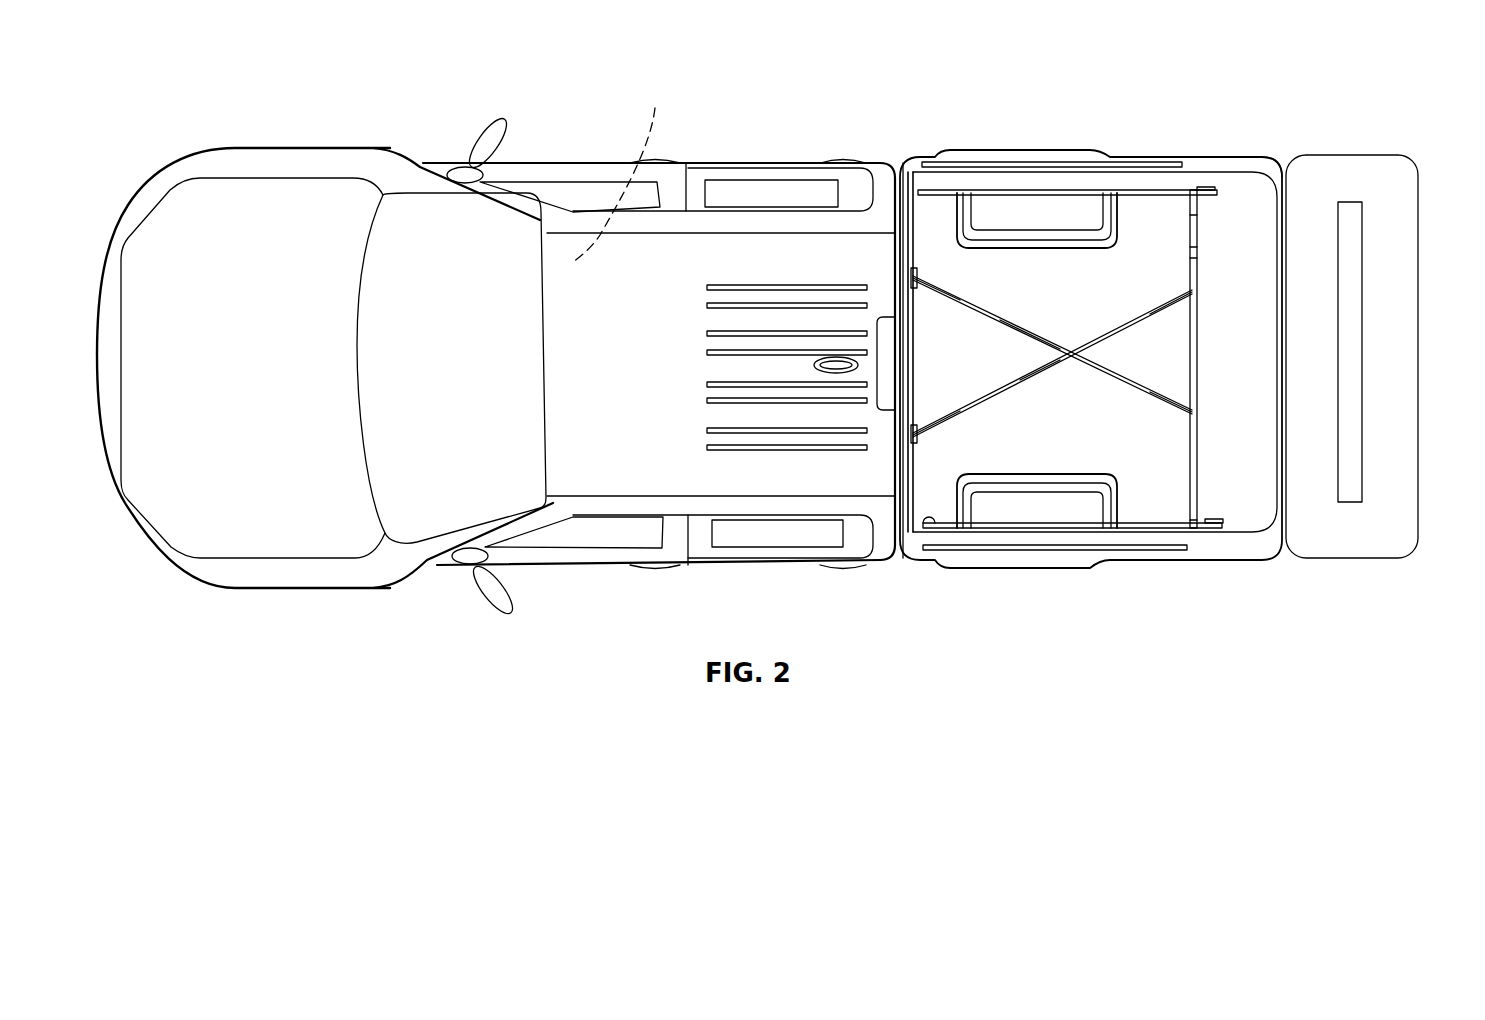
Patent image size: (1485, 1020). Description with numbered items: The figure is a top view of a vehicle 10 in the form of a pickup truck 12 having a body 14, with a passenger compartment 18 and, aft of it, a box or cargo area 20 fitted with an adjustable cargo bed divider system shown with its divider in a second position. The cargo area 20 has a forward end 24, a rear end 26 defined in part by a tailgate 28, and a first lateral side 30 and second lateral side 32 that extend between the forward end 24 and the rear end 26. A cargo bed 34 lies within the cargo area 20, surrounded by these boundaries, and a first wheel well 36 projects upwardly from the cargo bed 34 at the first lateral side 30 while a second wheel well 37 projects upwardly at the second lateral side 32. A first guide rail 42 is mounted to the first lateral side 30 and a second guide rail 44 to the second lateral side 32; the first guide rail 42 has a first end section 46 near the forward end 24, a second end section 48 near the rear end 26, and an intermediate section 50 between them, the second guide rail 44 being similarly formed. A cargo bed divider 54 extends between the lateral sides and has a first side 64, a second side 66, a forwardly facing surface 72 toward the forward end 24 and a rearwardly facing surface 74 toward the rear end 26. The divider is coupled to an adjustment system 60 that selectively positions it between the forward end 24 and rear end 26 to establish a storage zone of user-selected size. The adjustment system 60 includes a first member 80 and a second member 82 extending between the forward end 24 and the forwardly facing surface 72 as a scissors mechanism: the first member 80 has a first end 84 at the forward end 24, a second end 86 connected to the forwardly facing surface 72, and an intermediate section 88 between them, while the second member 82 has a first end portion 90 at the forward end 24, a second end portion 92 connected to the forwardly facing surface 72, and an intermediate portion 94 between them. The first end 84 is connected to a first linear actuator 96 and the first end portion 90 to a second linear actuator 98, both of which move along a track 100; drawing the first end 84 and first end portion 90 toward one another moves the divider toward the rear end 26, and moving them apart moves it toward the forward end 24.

The vehicle 10 is at (234, 92).
The pickup truck 12 is at (166, 175).
The body 14 is at (613, 483).
The passenger compartment 18 is at (622, 170).
The cargo area 20 is at (1263, 426).
The forward end 24 is at (915, 395).
The rear end 26 is at (1260, 212).
The tailgate 28 is at (1400, 187).
The first lateral side 30 is at (1137, 523).
The second lateral side 32 is at (1053, 195).
The cargo bed 34 is at (1280, 168).
The first wheel well 36 is at (1037, 520).
The second wheel well 37 is at (1023, 169).
The first guide rail 42 is at (1004, 513).
The second guide rail 44 is at (1170, 204).
The first end section 46 is at (930, 548).
The second end section 48 is at (1208, 520).
The intermediate section 50 is at (1063, 530).
The cargo bed divider 54 is at (1205, 224).
The adjustment system 60 is at (1001, 295).
The first side 64 is at (1193, 530).
The second side 66 is at (1227, 342).
The forwardly facing surface 72 is at (1187, 247).
The rearwardly facing surface 74 is at (1197, 258).
The first member 80 is at (1052, 365).
The second member 82 is at (963, 235).
The first end 84 is at (917, 433).
The second end 86 is at (1190, 293).
The intermediate section 88 is at (1042, 366).
The first end portion 90 is at (1010, 294).
The second end portion 92 is at (1180, 420).
The intermediate portion 94 is at (1027, 333).
The first linear actuator 96 is at (912, 432).
The second linear actuator 98 is at (912, 280).
The track 100 is at (952, 303).